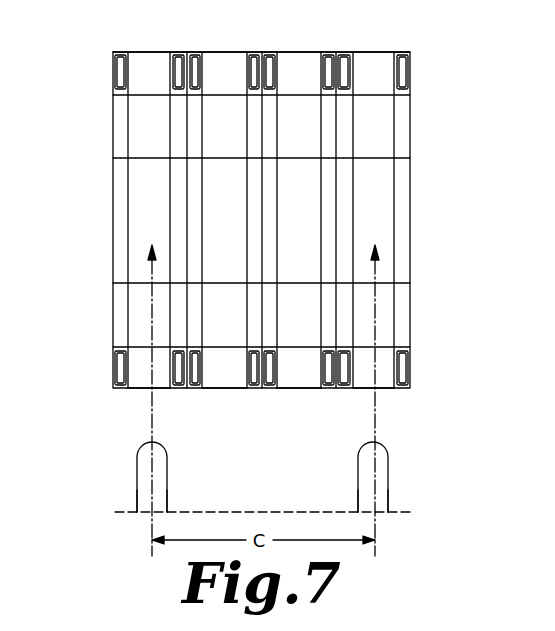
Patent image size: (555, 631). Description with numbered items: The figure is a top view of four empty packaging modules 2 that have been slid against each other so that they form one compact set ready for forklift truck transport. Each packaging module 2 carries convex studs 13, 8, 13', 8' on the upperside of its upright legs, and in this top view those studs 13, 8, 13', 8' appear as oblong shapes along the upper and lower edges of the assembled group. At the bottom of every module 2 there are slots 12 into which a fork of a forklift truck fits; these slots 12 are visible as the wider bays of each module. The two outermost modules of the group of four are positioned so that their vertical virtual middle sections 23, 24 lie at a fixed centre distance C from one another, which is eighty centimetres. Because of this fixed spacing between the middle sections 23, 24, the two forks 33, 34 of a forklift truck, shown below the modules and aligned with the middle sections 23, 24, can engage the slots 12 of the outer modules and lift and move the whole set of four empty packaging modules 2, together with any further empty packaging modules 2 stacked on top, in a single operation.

The packaging module 2 is at (114, 41).
The convex stud 13' is at (254, 83).
The convex stud 8' is at (249, 90).
The convex stud 13 is at (208, 404).
The convex stud 8 is at (303, 399).
The slot 12 is at (169, 392).
The vertical virtual middle section 23 is at (150, 438).
The vertical virtual middle section 24 is at (378, 440).
The fork 33 is at (140, 493).
The fork 34 is at (380, 492).